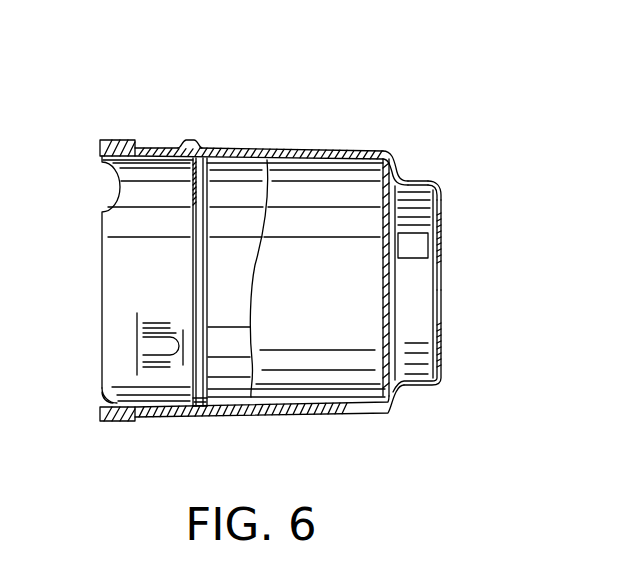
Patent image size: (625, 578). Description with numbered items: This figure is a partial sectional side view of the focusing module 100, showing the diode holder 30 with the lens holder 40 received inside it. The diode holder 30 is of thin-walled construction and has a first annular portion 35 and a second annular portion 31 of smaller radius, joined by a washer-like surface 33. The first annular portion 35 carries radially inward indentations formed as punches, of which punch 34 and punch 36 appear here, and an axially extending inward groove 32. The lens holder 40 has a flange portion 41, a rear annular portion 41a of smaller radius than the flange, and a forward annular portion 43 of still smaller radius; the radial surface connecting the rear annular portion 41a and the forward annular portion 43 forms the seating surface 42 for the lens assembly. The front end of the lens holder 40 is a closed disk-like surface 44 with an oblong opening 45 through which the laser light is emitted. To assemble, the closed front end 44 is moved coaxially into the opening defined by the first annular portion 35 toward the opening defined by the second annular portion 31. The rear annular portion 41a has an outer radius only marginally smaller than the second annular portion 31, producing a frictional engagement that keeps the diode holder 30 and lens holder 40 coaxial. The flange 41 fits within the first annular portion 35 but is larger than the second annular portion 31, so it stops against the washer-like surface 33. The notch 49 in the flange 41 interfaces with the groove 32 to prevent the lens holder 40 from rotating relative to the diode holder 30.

The focusing module 100 is at (334, 127).
The diode holder 30 is at (247, 137).
The second annular portion 31 is at (288, 411).
The groove 32 is at (152, 418).
The washer-like surface 33 is at (191, 143).
The punch 34 is at (160, 147).
The first annular portion 35 is at (126, 140).
The punch 36 is at (153, 345).
The lens holder 40 is at (470, 253).
The flange portion 41 is at (199, 408).
The rear annular portion 41a is at (373, 148).
The seating surface 42 is at (392, 172).
The forward annular portion 43 is at (426, 178).
The closed disk-like surface 44 is at (442, 211).
The opening 45 is at (442, 285).
The notch 49 is at (208, 410).